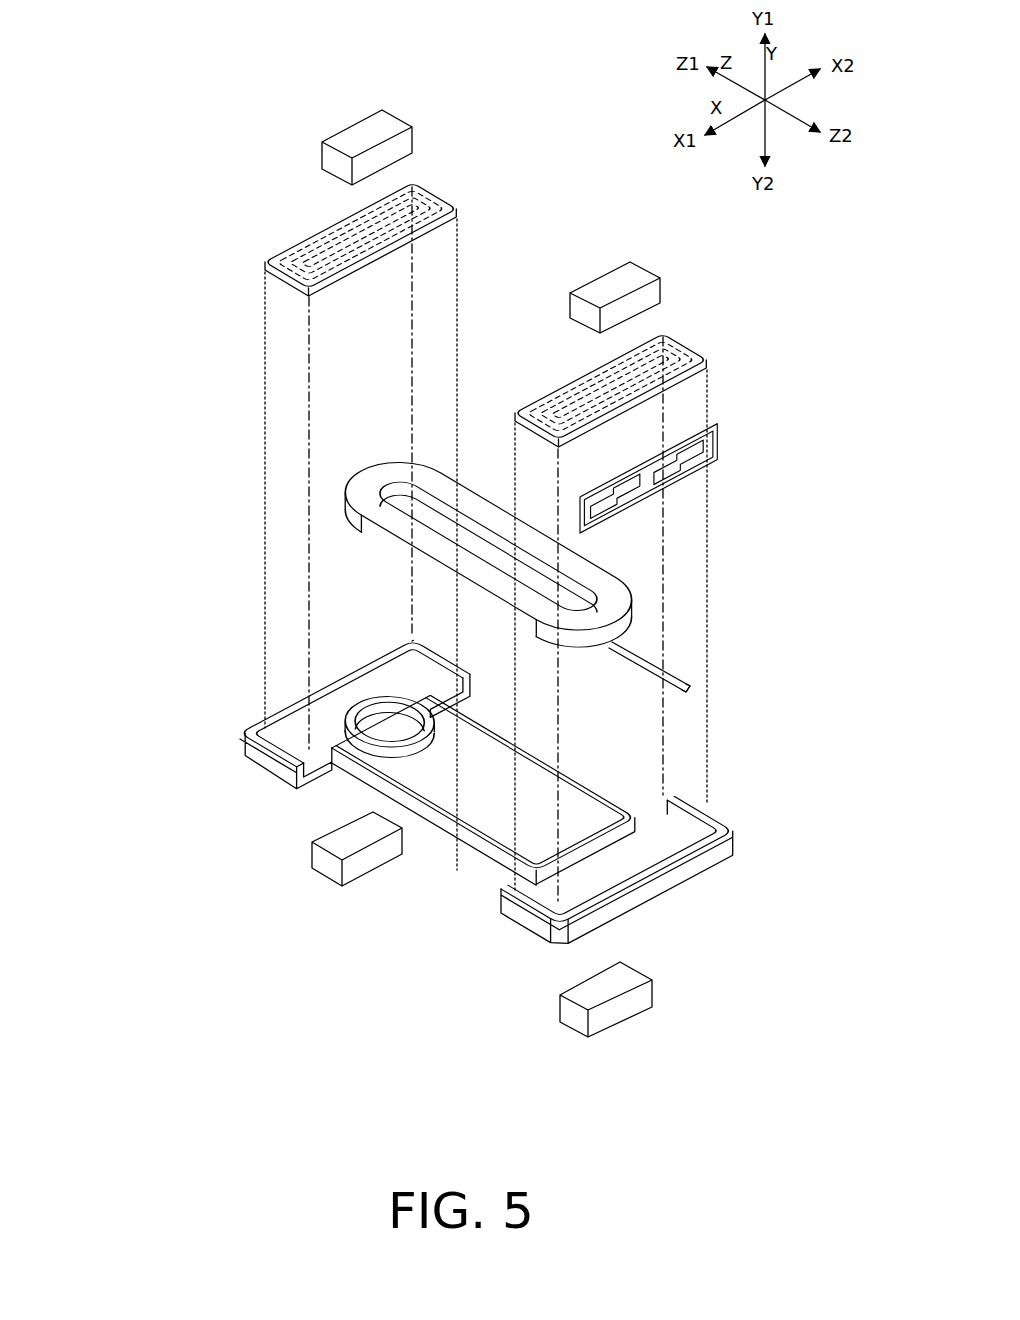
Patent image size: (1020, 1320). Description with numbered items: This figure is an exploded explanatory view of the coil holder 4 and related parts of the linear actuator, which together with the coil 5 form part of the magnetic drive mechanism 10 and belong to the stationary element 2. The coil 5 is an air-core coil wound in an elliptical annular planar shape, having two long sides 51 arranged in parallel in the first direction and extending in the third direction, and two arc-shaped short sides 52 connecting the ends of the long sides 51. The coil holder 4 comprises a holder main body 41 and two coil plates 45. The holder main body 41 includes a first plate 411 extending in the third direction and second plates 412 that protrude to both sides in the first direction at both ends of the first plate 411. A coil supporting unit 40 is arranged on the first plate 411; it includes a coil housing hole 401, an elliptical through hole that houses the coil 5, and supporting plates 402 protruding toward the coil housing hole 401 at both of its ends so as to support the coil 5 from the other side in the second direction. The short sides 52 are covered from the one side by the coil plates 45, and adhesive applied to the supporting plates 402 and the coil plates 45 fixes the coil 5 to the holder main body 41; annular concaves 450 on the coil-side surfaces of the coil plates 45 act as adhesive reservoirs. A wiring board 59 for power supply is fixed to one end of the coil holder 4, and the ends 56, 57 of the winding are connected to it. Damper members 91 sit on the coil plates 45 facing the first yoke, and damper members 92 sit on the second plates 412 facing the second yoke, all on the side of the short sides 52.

The magnetic drive mechanism 10 is at (172, 716).
The stationary element 2 is at (442, 563).
The coil holder 4 is at (161, 478).
The coil plates 45 is at (513, 418).
The annular concaves 450 is at (312, 240).
The holder main body 41 is at (245, 729).
The second plates 412 is at (378, 648).
The coil supporting unit 40 is at (450, 817).
The coil housing hole 401 is at (378, 775).
The supporting plates 402 is at (372, 765).
The first plate 411 is at (487, 857).
The coil 5 is at (466, 498).
The long sides 51 is at (503, 535).
The short sides 52 is at (357, 480).
The end of winding 56 is at (675, 688).
The end of winding 57 is at (686, 677).
The wiring board 59 is at (721, 446).
The damper members 91 is at (372, 122).
The damper members 92 is at (318, 868).